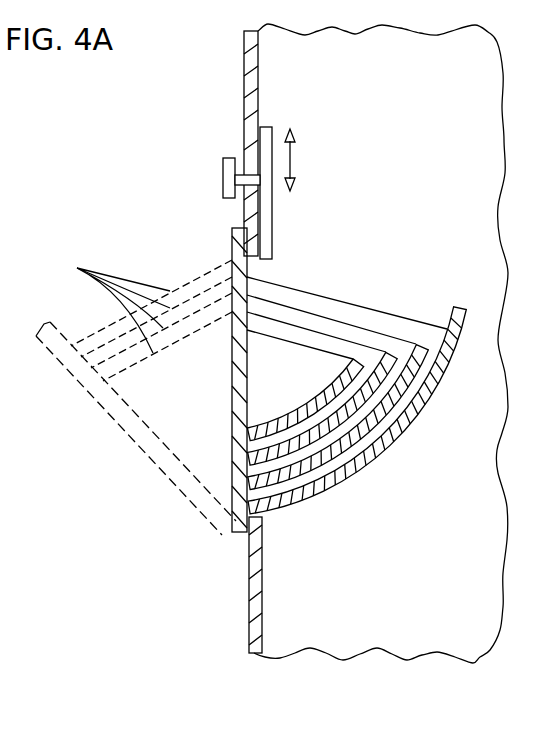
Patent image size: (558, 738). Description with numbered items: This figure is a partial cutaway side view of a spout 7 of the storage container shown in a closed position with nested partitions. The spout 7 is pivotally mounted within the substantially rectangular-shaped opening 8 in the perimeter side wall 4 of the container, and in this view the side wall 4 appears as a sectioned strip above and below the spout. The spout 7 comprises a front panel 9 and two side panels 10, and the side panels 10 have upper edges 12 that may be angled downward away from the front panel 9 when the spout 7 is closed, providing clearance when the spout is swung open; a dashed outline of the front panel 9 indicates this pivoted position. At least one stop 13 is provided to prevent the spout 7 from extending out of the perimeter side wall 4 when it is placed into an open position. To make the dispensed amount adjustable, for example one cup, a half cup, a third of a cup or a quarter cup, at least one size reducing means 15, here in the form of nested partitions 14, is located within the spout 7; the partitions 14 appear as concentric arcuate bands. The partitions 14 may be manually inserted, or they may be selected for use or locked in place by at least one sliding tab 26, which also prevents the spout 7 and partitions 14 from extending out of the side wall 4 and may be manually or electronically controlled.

The perimeter side wall 4 is at (244, 80).
The spout 7 is at (232, 414).
The opening 8 is at (262, 260).
The front panel 9 is at (232, 368).
The side panels 10 is at (365, 318).
The upper edges 12 is at (318, 296).
The stop 13 is at (456, 305).
The partition 14 is at (418, 480).
The size reducing means 15 is at (418, 482).
The sliding tab 26 is at (223, 181).